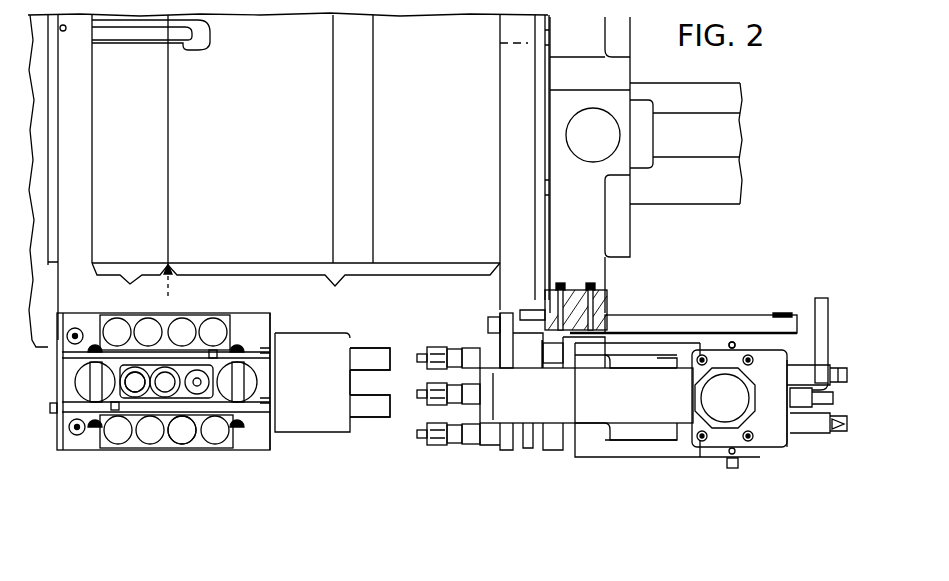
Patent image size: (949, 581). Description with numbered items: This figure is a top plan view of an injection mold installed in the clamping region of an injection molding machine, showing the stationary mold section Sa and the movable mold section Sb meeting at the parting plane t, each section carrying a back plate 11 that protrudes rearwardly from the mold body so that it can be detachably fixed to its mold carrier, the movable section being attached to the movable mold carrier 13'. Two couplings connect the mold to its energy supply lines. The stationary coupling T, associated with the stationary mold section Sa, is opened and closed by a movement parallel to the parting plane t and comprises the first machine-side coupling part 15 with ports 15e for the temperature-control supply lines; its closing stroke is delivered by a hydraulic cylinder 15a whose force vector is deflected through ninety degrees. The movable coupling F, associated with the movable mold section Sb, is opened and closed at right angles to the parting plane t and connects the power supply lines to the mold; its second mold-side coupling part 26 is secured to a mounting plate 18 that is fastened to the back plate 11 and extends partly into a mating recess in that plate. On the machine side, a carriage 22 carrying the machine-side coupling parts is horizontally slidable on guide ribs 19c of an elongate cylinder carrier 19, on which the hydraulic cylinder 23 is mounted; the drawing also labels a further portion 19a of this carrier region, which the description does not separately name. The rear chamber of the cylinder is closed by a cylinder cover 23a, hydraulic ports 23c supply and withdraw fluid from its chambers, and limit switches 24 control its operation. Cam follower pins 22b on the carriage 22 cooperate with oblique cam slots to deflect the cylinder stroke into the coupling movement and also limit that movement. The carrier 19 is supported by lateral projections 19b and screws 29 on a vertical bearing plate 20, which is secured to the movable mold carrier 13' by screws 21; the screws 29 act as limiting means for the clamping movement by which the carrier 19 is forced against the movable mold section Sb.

The back plate 11 is at (87, 230).
The movable mold carrier 13' is at (656, 165).
The first machine-side coupling part 15 is at (206, 460).
The hydraulic cylinder 15a is at (332, 408).
The ports 15e is at (182, 433).
The mounting plate 18 is at (503, 452).
The cylinder carrier 19 is at (562, 404).
The hose connections 19a is at (475, 447).
The lateral projections 19b is at (783, 343).
The guide ribs 19c is at (565, 450).
The bearing plate 20 is at (673, 323).
The screws 21 is at (590, 304).
The carriage 22 is at (639, 468).
The cam follower pins 22b is at (730, 380).
The hydraulic cylinder 23 is at (773, 462).
The cylinder cover 23a is at (744, 330).
The hydraulic ports 23c is at (802, 440).
The limit switches 24 is at (822, 440).
The second mold-side coupling part 26 is at (455, 357).
The screws 29 is at (523, 313).
The stationary coupling T is at (252, 462).
The movable coupling F is at (428, 460).
The stationary mold section Sa is at (129, 301).
The movable mold section Sb is at (337, 304).
The parting plane t is at (167, 288).